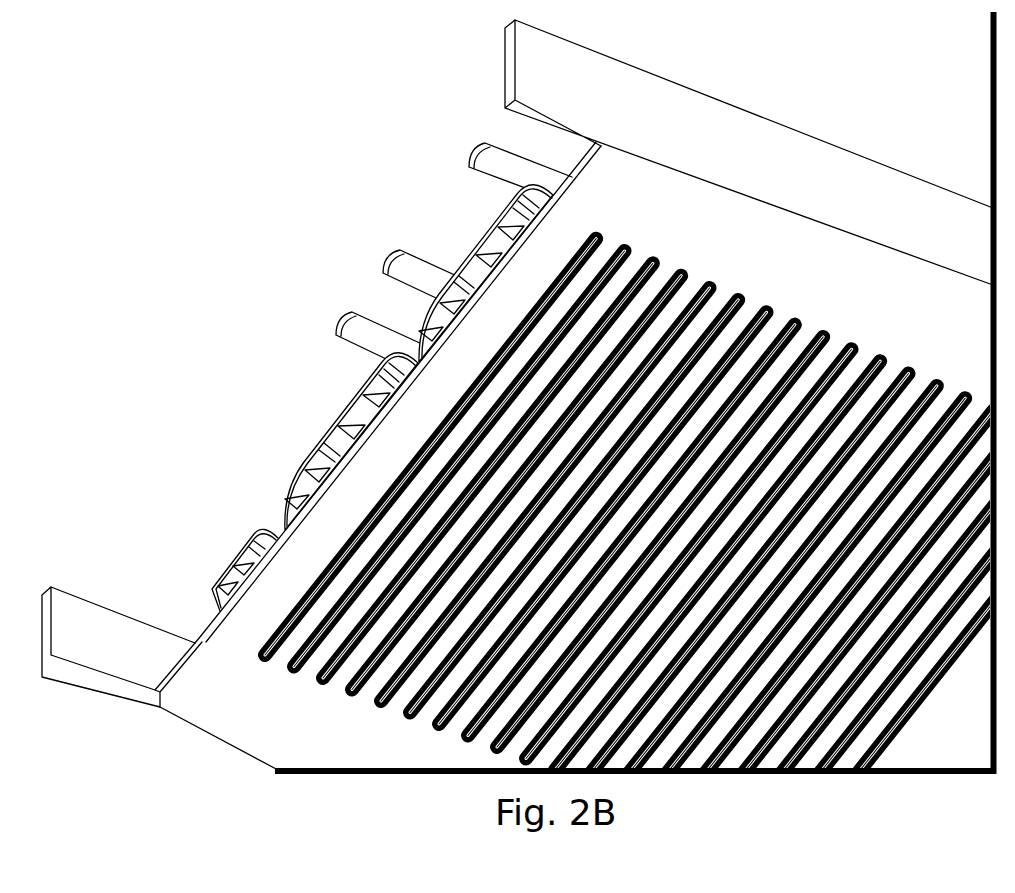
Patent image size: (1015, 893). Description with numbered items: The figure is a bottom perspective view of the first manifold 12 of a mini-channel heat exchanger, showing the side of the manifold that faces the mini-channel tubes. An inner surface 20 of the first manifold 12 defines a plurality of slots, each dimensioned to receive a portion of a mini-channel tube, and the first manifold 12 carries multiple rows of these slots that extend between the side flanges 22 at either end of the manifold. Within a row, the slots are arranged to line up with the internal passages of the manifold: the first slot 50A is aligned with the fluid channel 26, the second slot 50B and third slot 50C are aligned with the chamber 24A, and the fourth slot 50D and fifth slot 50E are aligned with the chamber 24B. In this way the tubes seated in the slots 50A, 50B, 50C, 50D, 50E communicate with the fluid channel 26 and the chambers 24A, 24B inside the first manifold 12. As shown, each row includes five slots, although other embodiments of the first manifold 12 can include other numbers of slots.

The first manifold 12 is at (376, 392).
The inner surface 20 is at (215, 700).
The side flanges 22 is at (752, 138).
The chamber 24A is at (310, 483).
The chamber 24B is at (480, 262).
The fluid channel 26 is at (241, 572).
The first slot 50A is at (315, 594).
The second slot 50B is at (374, 518).
The third slot 50C is at (424, 442).
The fourth slot 50D is at (492, 371).
The fifth slot 50E is at (560, 278).